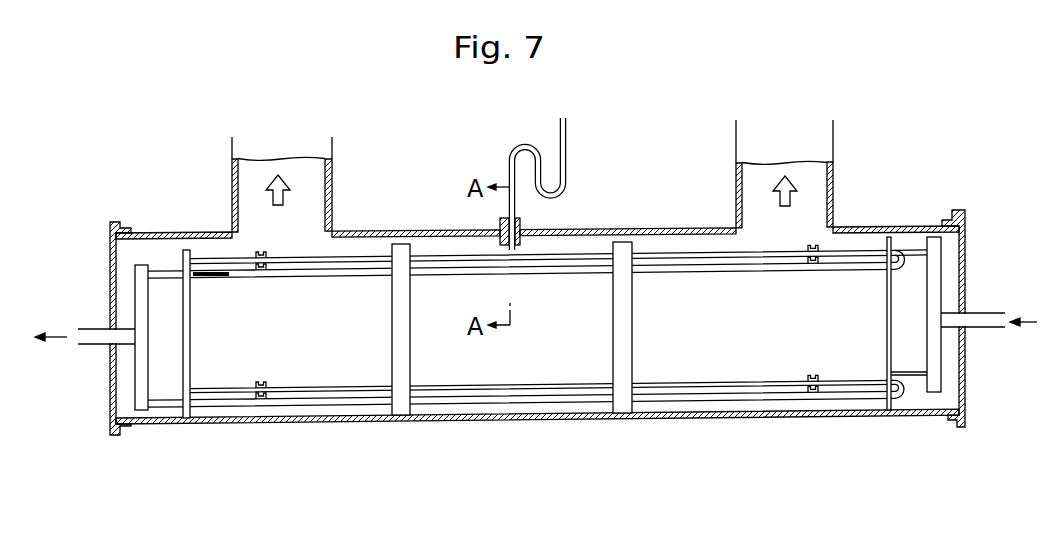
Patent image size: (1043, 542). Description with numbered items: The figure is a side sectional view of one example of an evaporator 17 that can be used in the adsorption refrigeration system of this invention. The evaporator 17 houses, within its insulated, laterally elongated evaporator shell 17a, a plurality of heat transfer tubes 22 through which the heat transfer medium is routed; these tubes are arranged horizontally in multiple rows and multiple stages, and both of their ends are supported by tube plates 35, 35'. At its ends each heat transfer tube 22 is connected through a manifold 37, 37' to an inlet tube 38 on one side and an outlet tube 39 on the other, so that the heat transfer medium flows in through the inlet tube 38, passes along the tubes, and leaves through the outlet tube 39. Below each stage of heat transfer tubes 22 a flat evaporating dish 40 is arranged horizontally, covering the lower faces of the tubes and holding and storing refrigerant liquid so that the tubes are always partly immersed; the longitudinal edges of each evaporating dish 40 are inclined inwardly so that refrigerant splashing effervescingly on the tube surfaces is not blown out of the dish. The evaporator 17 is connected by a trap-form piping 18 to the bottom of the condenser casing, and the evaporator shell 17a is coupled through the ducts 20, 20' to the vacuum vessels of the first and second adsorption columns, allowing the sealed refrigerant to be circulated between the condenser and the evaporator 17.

The evaporator 17 is at (619, 212).
The evaporator shell 17a is at (793, 418).
The piping 18 is at (508, 160).
The duct 20 is at (313, 184).
The duct 20' is at (814, 174).
The heat transfer tubes 22 is at (168, 270).
The tube plate 35 is at (180, 368).
The tube plate 35' is at (909, 359).
The manifold 37 is at (976, 314).
The manifold 37' is at (101, 345).
The inlet tube 38 is at (985, 314).
The outlet tube 39 is at (88, 329).
The evaporating dish 40 is at (730, 400).